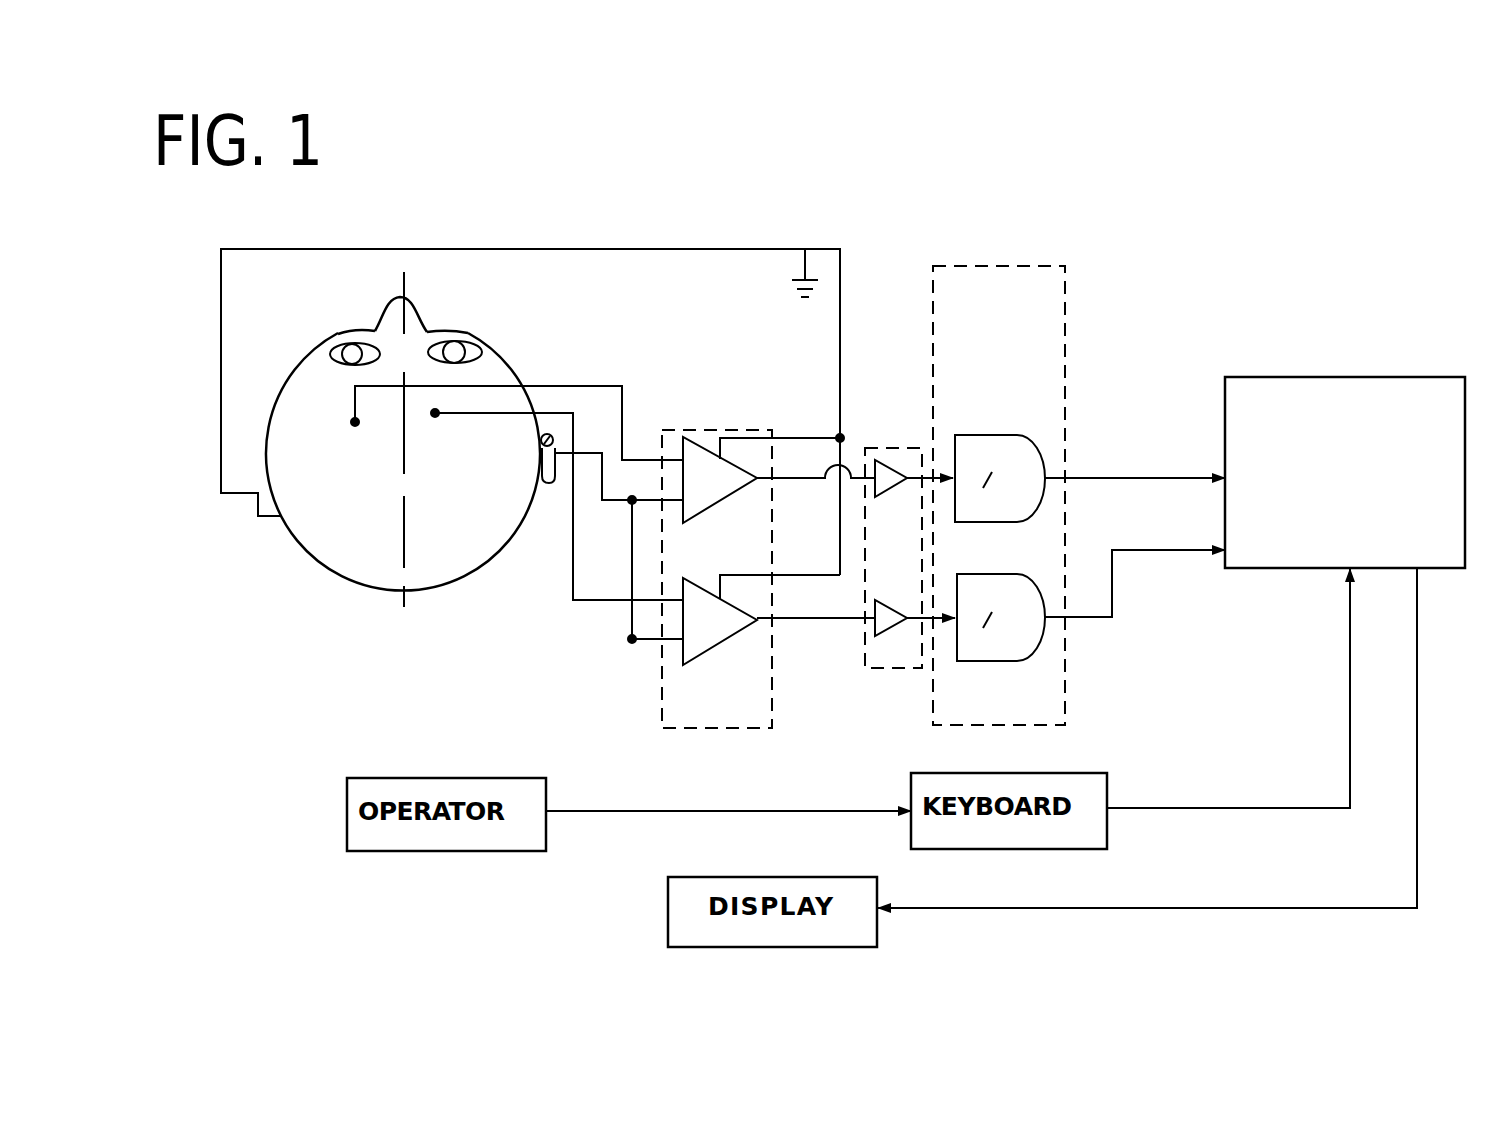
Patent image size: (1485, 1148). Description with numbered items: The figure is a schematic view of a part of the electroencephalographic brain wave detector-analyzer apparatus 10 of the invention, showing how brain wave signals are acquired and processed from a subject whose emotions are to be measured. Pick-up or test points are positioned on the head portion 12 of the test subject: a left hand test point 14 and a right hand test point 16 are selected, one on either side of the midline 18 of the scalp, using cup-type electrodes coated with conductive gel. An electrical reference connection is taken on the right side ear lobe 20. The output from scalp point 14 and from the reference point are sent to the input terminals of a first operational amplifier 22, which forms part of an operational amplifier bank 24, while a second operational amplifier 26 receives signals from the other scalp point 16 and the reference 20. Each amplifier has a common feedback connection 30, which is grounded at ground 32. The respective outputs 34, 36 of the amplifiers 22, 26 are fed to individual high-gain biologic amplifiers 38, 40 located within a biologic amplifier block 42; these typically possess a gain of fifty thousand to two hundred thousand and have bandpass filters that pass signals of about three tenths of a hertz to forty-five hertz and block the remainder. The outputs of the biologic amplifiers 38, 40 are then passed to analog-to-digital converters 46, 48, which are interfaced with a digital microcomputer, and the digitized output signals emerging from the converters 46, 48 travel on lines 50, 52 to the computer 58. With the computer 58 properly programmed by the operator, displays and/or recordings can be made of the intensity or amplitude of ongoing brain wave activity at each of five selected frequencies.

The detector-analyzer apparatus 10 is at (899, 236).
The head portion 12 is at (340, 604).
The left hand test point 14 is at (355, 421).
The right hand test point 16 is at (437, 416).
The midline 18 is at (404, 510).
The right side ear lobe 20 is at (552, 436).
The first operational amplifier 22 is at (697, 458).
The operational amplifier bank 24 is at (732, 693).
The second operational amplifier 26 is at (690, 647).
The common feedback connection 30 is at (585, 249).
The ground 32 is at (805, 262).
The output of first operational amplifier 34 is at (800, 478).
The output of second operational amplifier 36 is at (820, 620).
The biologic amplifier 38 is at (915, 450).
The biologic amplifier 40 is at (880, 610).
The biologic amplifier block 42 is at (878, 565).
The analog-to-digital converter 46 is at (1030, 462).
The analog-to-digital converter 48 is at (1025, 627).
The output line 50 is at (1110, 478).
The output line 52 is at (1148, 552).
The computer 58 is at (1366, 517).